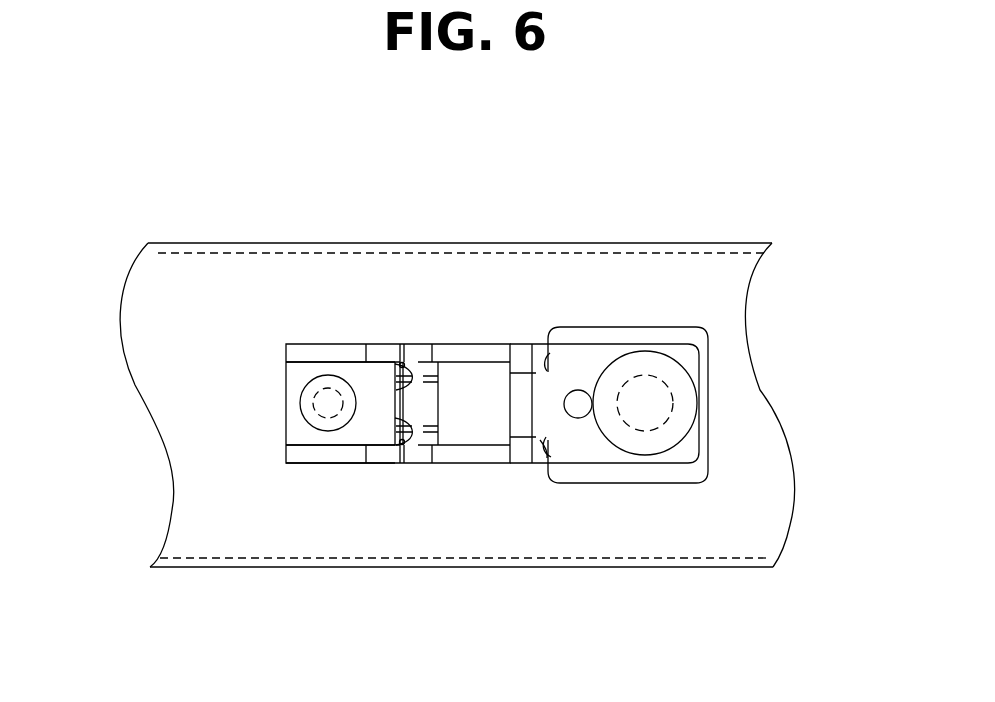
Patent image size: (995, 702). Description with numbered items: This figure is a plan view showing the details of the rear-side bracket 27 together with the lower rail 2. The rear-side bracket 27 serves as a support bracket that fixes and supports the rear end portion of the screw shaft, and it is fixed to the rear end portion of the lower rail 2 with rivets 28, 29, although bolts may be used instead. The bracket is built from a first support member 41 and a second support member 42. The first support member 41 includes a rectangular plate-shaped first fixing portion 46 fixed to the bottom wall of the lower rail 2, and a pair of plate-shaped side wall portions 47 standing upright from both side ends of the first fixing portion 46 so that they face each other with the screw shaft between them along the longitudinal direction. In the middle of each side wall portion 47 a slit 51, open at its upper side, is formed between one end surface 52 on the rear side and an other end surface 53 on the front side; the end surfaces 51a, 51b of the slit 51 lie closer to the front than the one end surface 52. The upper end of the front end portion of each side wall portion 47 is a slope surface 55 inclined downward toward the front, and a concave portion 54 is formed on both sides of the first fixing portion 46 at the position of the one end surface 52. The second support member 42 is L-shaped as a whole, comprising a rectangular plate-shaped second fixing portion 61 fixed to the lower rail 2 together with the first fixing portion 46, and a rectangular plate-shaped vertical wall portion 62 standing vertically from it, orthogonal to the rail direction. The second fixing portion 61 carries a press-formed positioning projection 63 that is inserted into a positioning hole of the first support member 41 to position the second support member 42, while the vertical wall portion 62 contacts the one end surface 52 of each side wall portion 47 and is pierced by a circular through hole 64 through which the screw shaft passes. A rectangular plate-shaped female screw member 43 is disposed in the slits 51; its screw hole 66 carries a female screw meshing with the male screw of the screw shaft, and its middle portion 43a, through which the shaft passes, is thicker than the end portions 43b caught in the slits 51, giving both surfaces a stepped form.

The lower rail 2 is at (772, 533).
The rear-side bracket 27 is at (492, 285).
The rivet 28 is at (641, 450).
The rivet 29 is at (347, 448).
The first support member 41 is at (485, 352).
The second support member 42 is at (580, 367).
The female screw member 43 is at (407, 477).
The middle portion 43a is at (435, 415).
The end portions 43b is at (402, 366).
The first fixing portion 46 is at (350, 459).
The side wall portions 47 is at (310, 352).
The slit 51 is at (360, 393).
The end surface of slit 51a is at (418, 352).
The end surface of slit 51b is at (412, 352).
The one end surface 52 is at (526, 352).
The other end surface 53 is at (286, 346).
The concave portion 54 is at (543, 445).
The slope surface 55 is at (336, 358).
The second fixing portion 61 is at (688, 358).
The vertical wall portion 62 is at (517, 408).
The positioning projection 63 is at (580, 418).
The through hole 64 is at (553, 455).
The screw hole 66 is at (444, 388).